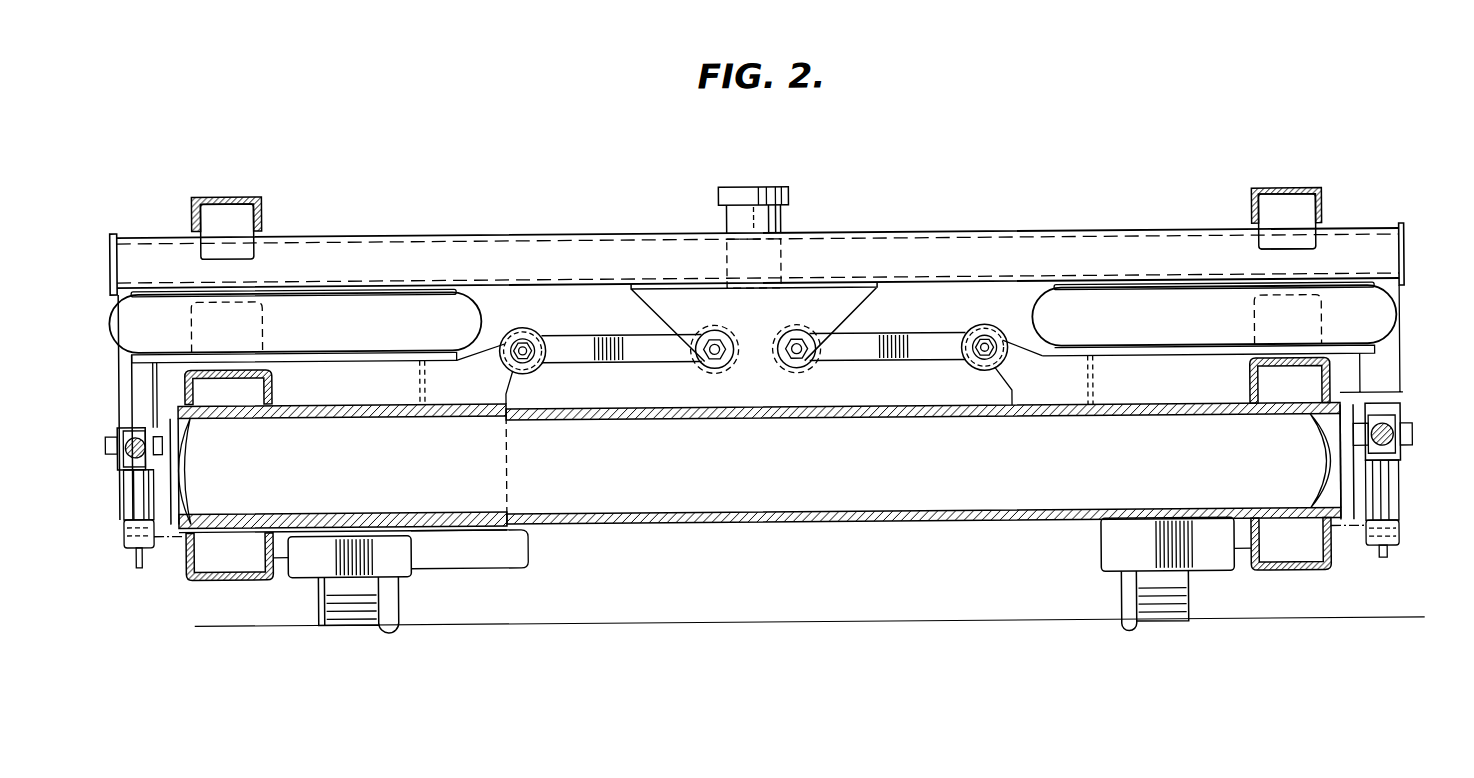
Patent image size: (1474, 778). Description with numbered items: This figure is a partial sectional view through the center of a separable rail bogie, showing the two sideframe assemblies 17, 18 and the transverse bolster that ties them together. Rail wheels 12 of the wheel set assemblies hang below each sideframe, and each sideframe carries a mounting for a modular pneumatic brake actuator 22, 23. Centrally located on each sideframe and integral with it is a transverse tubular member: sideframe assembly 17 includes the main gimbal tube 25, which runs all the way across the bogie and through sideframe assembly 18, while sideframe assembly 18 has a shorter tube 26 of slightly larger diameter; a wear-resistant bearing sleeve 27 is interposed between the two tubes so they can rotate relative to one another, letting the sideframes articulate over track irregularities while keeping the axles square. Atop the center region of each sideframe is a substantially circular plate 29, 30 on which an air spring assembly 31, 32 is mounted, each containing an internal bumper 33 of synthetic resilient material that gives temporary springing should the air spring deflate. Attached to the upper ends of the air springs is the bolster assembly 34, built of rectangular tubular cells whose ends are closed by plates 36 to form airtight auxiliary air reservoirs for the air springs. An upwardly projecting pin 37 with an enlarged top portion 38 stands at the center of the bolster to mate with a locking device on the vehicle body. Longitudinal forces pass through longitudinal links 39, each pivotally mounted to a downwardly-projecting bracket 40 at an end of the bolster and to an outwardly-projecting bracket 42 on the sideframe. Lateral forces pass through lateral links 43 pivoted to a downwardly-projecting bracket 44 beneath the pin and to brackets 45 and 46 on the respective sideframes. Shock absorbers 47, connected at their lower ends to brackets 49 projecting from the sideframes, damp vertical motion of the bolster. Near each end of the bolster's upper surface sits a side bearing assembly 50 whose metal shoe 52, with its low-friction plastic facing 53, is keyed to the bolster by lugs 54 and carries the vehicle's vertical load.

The rail wheel 12 is at (318, 600).
The sideframe assembly 17 is at (1283, 572).
The sideframe assembly 18 is at (214, 577).
The brake actuator 22 is at (425, 573).
The brake actuator 23 is at (1100, 552).
The main gimbal tube 25 is at (820, 520).
The shorter tube 26 is at (448, 526).
The bearing sleeve 27 is at (386, 413).
The circular plate 29 is at (1150, 365).
The circular plate 30 is at (302, 364).
The air spring assembly 31 is at (1383, 322).
The air spring assembly 32 is at (116, 316).
The internal bumper 33 is at (265, 317).
The bolster assembly 34 is at (990, 207).
The plate 36 is at (111, 257).
The pin 37 is at (797, 220).
The enlarged top portion 38 is at (780, 191).
The longitudinal link 39 is at (126, 428).
The downwardly-projecting bracket 40 is at (119, 389).
The outwardly-projecting bracket 42 is at (1395, 468).
The lateral link 43 is at (612, 362).
The downwardly-projecting bracket 44 is at (762, 362).
The bracket 45 is at (985, 372).
The bracket 46 is at (528, 370).
The shock absorber 47 is at (122, 499).
The bracket 49 is at (168, 560).
The side bearing assembly 50 is at (764, 206).
The metal shoe 52 is at (1253, 210).
The low-friction plastic facing 53 is at (205, 188).
The lug 54 is at (1318, 244).